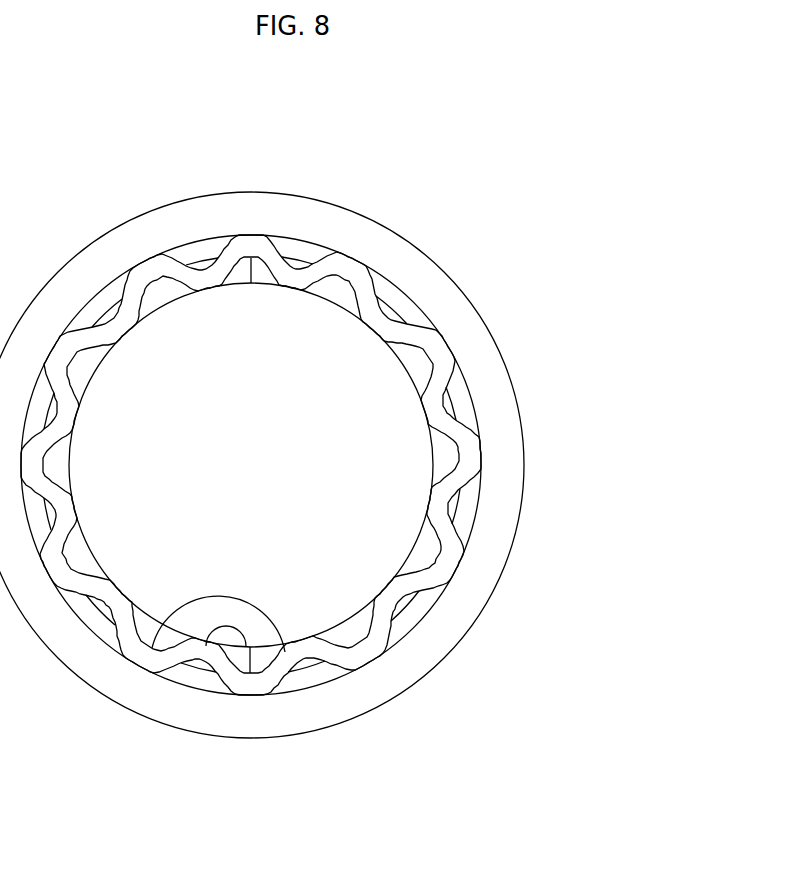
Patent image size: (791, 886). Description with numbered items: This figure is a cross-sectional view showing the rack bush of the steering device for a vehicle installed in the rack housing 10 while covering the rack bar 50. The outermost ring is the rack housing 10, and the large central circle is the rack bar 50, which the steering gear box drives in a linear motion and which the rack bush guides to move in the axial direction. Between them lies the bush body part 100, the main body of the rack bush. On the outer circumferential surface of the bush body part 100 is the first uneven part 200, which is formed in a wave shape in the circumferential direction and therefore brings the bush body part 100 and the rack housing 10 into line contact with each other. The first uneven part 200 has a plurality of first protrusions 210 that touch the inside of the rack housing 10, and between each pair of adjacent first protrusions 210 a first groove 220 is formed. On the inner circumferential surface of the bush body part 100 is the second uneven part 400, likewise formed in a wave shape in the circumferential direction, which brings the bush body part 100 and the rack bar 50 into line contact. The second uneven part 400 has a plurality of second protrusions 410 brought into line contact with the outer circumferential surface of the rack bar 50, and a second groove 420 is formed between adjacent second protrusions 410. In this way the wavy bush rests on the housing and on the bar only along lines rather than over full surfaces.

The rack housing 10 is at (323, 210).
The rack bar 50 is at (327, 532).
The bush body part 100 is at (443, 413).
The first uneven part 200 is at (299, 428).
The first protrusions 210 is at (452, 345).
The first groove 220 is at (392, 322).
The second uneven part 400 is at (248, 733).
The second protrusions 410 is at (251, 650).
The second groove 420 is at (285, 652).